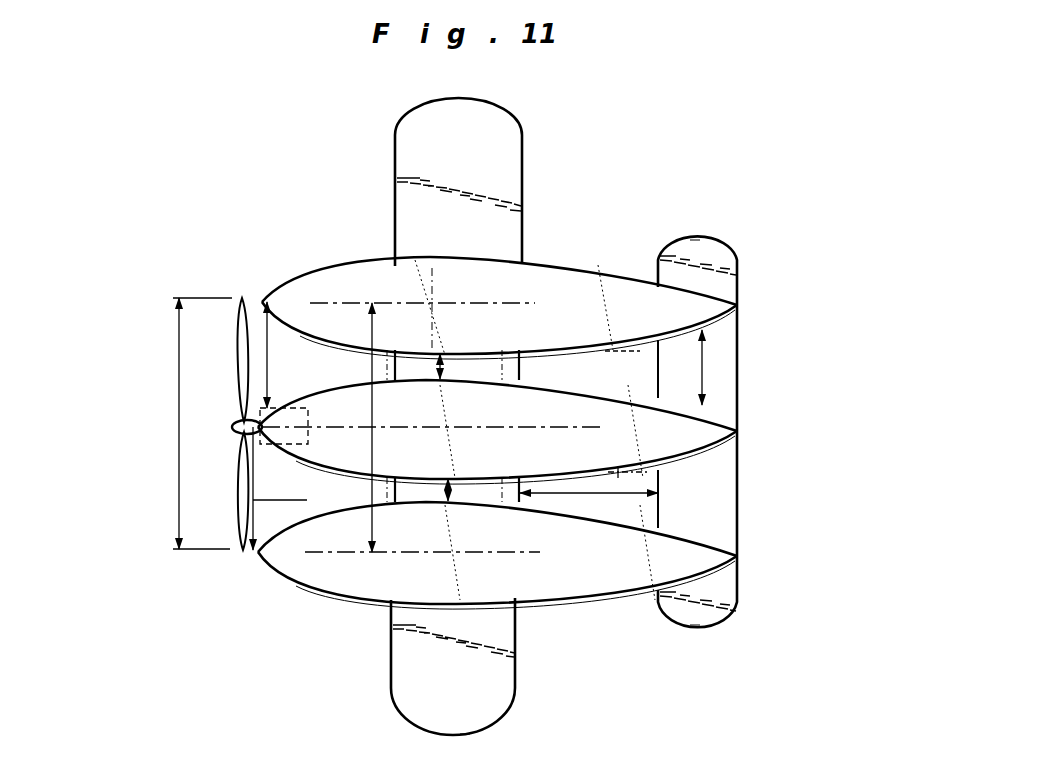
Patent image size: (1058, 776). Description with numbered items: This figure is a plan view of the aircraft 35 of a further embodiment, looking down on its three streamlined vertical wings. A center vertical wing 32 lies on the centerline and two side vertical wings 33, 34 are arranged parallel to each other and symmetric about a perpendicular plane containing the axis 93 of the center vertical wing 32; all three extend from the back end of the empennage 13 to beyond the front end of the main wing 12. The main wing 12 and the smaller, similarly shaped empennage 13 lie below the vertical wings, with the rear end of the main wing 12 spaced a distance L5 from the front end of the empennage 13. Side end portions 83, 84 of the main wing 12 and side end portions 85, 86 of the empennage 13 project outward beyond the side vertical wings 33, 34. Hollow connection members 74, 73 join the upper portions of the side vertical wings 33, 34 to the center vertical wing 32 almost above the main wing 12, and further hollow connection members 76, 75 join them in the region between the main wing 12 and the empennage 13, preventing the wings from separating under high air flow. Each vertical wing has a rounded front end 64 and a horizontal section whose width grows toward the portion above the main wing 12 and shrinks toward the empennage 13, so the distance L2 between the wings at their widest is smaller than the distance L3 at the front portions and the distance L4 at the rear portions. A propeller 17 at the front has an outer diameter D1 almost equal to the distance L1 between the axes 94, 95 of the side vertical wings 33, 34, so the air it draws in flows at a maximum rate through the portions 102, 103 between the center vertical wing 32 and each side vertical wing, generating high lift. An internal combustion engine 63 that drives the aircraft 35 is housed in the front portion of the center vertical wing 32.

The main wing 12 is at (506, 683).
The empennage 13 is at (708, 250).
The propeller 17 is at (236, 357).
The center vertical wing 32 is at (540, 392).
The side vertical wing 33 is at (600, 575).
The side vertical wing 34 is at (597, 272).
The aircraft 35 is at (605, 167).
The internal combustion engine 63 is at (283, 446).
The front end 64 is at (265, 302).
The hollow connection member 73 is at (453, 345).
The hollow connection member 74 is at (430, 493).
The hollow connection member 75 is at (636, 347).
The hollow connection member 76 is at (648, 473).
The side end portion 83 is at (402, 705).
The side end portion 84 is at (505, 149).
The side end portion 85 is at (690, 618).
The side end portion 86 is at (690, 250).
The axis 93 is at (582, 430).
The axis 94 is at (504, 555).
The axis 95 is at (468, 308).
The portion 102 is at (458, 370).
The portion 103 is at (449, 490).
The outer diameter D1 is at (179, 406).
The distance L1 is at (373, 451).
The distance L2 is at (445, 360).
The distance L3 is at (268, 360).
The distance L4 is at (705, 363).
The distance L5 is at (581, 496).